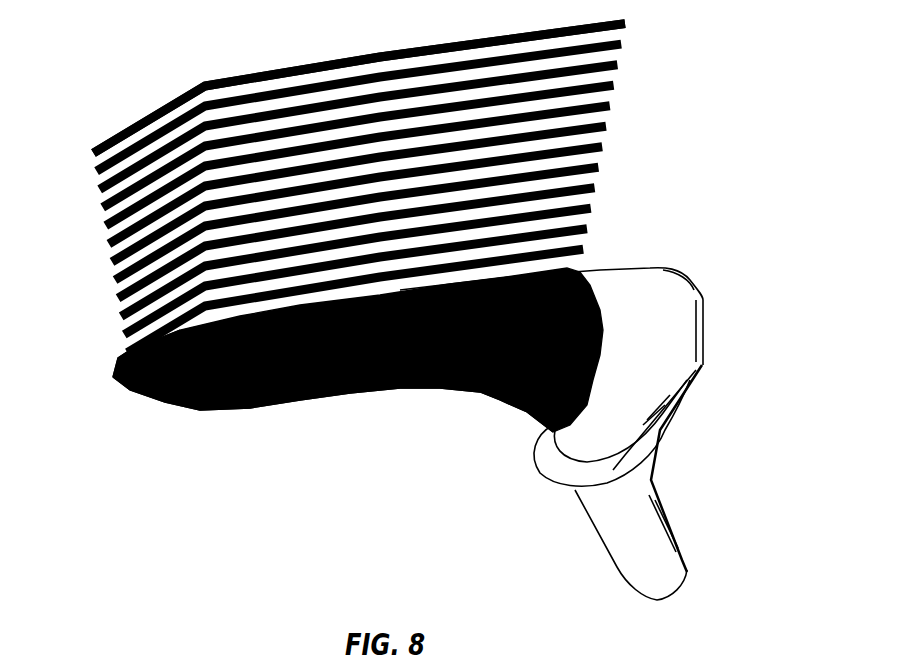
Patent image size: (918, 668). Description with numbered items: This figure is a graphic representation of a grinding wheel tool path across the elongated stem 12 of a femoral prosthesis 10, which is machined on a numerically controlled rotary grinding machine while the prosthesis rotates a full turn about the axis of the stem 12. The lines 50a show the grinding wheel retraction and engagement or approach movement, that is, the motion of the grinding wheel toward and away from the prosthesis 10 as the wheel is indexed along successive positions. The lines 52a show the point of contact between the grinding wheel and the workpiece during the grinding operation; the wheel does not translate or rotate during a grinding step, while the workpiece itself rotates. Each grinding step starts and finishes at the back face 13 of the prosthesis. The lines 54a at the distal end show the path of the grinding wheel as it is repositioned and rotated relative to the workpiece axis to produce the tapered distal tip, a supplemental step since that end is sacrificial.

The femoral prosthesis 10 is at (520, 418).
The elongated stem 12 is at (348, 392).
The back face 13 is at (650, 272).
The lines 50a is at (633, 15).
The lines 52a is at (123, 355).
The lines 54a is at (170, 100).